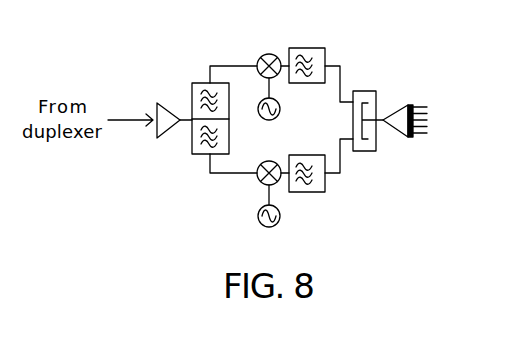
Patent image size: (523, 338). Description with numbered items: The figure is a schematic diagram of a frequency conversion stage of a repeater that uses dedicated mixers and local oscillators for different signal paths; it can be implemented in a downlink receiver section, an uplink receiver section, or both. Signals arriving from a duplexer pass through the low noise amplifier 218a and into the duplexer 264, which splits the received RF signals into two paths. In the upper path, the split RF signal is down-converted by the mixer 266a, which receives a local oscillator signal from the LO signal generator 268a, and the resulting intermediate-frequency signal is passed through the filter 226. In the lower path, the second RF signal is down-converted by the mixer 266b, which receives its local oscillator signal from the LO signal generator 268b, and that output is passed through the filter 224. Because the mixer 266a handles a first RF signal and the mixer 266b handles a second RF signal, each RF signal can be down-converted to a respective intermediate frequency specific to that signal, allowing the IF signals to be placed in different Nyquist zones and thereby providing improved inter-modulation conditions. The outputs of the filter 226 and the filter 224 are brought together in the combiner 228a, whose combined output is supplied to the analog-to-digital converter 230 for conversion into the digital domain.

The low noise amplifier 218a is at (163, 105).
The duplexer 264 is at (198, 155).
The mixer 266a is at (260, 56).
The LO signal generator 268a is at (280, 106).
The filter 226 is at (305, 48).
The mixer 266b is at (261, 185).
The LO signal generator 268b is at (279, 222).
The filter 224 is at (320, 192).
The combiner 228a is at (366, 90).
The analog-to-digital converter 230 is at (405, 106).